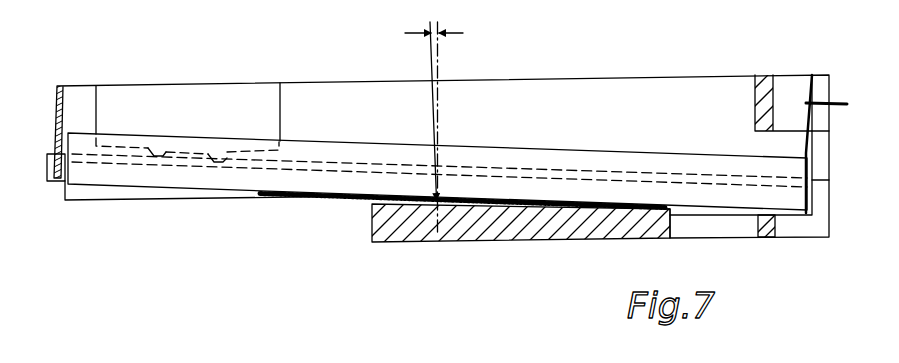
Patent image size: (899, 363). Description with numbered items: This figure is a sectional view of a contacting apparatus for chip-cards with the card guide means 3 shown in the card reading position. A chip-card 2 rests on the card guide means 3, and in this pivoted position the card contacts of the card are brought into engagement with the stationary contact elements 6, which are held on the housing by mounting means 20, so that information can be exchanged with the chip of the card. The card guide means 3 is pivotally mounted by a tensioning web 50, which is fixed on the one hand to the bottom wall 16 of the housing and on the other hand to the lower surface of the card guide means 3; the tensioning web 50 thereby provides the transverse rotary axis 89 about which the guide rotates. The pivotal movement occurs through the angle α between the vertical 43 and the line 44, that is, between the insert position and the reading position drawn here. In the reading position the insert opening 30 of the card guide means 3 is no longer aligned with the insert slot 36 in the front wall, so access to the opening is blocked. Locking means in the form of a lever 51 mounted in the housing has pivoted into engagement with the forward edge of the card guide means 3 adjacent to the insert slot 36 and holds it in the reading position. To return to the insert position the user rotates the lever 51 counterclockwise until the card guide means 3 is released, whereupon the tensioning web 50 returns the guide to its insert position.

The chip-card 2 is at (674, 180).
The card guide means 3 is at (594, 150).
The contact elements 6 is at (153, 150).
The bottom wall 16 is at (533, 223).
The mounting means 20 is at (96, 121).
The insert opening 30 is at (812, 180).
The insert slot 36 is at (811, 166).
The vertical 43 is at (428, 52).
The line 44 is at (444, 66).
The tensioning web 50 is at (332, 200).
The lever 51 is at (843, 94).
The transverse rotary axis 89 is at (437, 201).